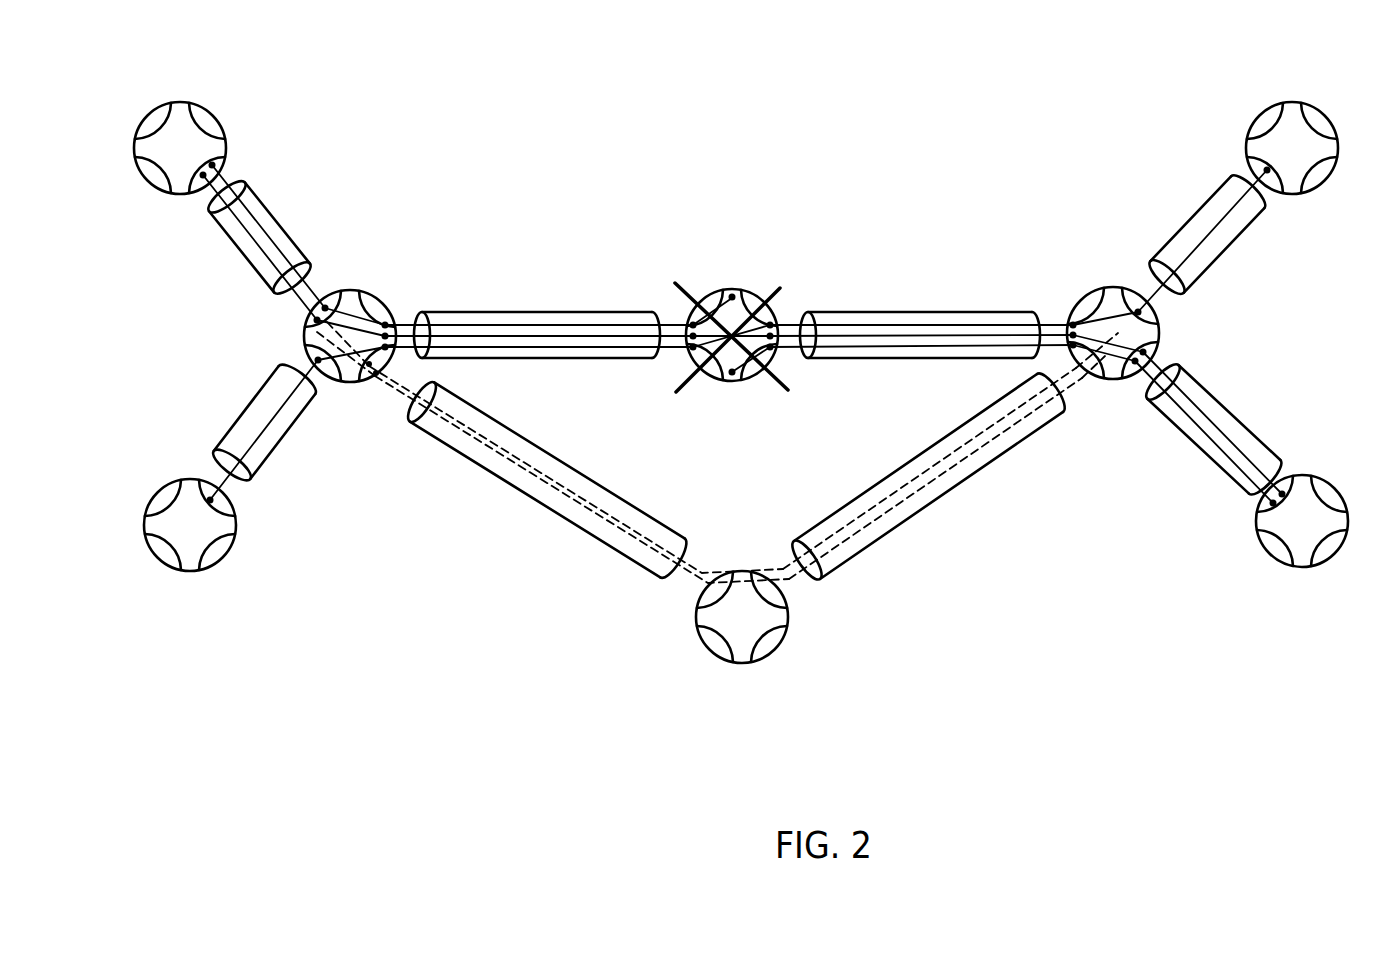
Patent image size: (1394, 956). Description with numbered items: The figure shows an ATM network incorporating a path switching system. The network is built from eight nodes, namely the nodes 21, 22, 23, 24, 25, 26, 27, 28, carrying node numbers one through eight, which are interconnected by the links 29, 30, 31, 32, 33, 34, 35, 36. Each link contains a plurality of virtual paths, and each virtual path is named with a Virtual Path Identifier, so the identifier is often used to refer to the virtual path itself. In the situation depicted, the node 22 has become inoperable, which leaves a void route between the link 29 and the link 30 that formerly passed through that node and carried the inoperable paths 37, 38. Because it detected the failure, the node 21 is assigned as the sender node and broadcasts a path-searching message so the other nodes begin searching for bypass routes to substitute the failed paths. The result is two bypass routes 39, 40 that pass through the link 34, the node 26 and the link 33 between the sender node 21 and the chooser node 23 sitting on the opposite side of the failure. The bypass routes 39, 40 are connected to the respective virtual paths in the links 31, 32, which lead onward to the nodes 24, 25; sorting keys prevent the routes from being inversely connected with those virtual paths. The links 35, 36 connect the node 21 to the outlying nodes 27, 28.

The node 21 is at (337, 385).
The node 22 is at (707, 288).
The node 23 is at (1092, 288).
The node 24 is at (1298, 195).
The node 25 is at (1302, 568).
The node 26 is at (782, 650).
The node 27 is at (217, 107).
The node 28 is at (220, 562).
The link 29 is at (545, 358).
The link 30 is at (921, 324).
The link 31 is at (1235, 247).
The link 32 is at (1195, 448).
The link 33 is at (920, 510).
The link 34 is at (579, 511).
The link 35 is at (238, 253).
The link 36 is at (280, 450).
The inoperable path 37 is at (860, 334).
The inoperable path 38 is at (855, 334).
The bypass route 39 is at (637, 533).
The bypass route 40 is at (620, 540).